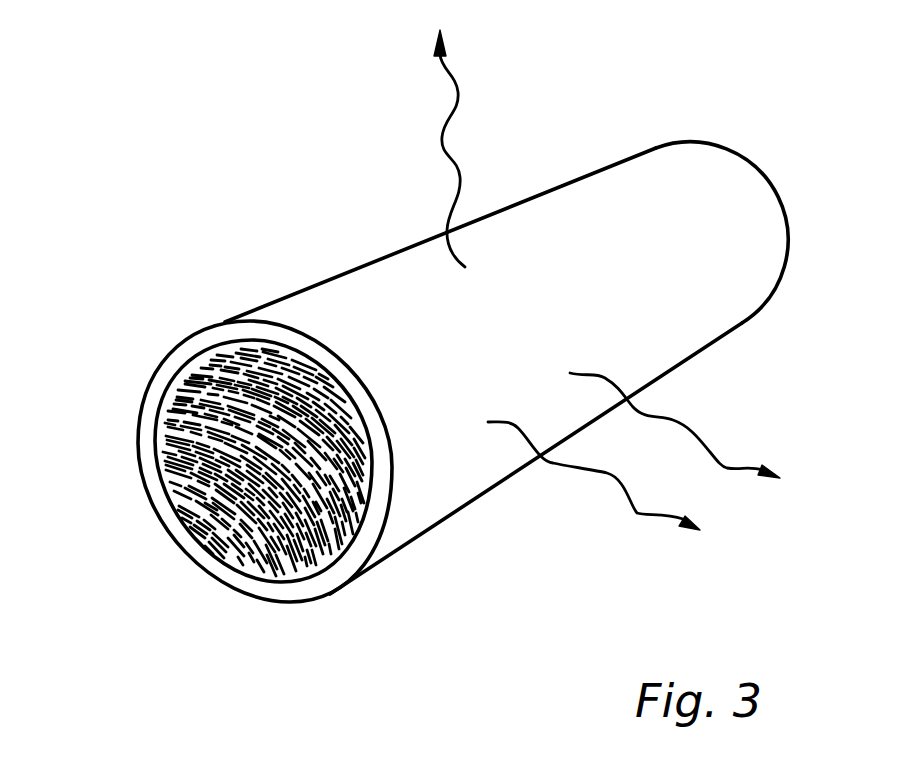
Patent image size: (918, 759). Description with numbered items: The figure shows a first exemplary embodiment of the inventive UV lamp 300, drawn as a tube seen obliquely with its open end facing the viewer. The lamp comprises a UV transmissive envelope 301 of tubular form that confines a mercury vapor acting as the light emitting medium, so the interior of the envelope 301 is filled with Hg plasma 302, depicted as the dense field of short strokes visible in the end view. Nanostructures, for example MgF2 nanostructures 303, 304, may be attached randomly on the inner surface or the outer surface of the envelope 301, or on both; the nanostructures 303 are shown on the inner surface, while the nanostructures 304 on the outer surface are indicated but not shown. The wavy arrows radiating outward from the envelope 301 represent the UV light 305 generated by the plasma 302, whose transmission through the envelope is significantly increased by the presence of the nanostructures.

The UV lamp 300 is at (464, 364).
The UV transmissive envelope 301 is at (508, 372).
The Hg plasma 302 is at (221, 468).
The MgF2 nanostructures 303 is at (287, 547).
The MgF2 nanostructures 304 is at (768, 255).
The UV light 305 is at (460, 95).